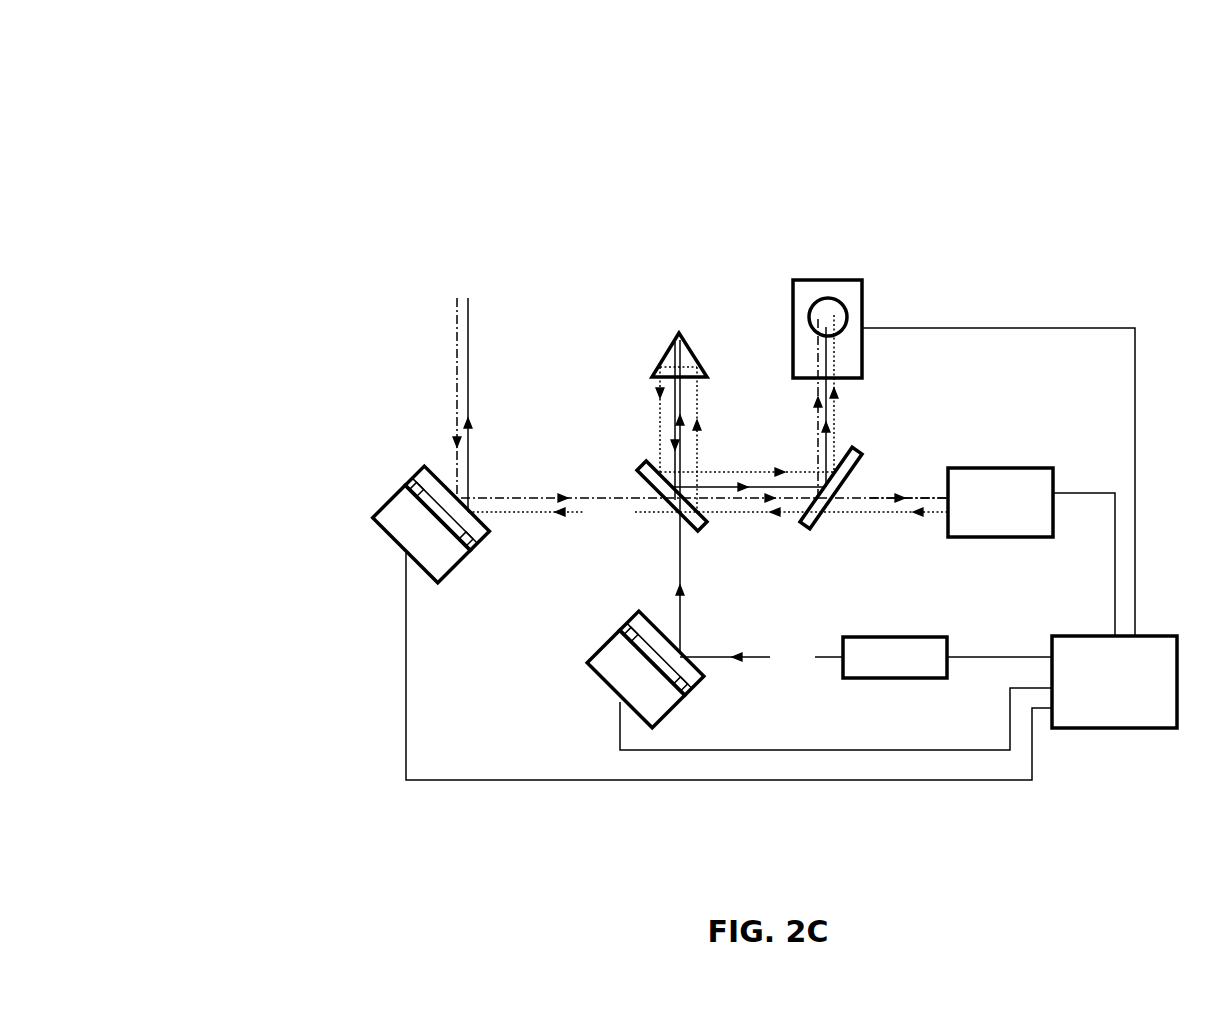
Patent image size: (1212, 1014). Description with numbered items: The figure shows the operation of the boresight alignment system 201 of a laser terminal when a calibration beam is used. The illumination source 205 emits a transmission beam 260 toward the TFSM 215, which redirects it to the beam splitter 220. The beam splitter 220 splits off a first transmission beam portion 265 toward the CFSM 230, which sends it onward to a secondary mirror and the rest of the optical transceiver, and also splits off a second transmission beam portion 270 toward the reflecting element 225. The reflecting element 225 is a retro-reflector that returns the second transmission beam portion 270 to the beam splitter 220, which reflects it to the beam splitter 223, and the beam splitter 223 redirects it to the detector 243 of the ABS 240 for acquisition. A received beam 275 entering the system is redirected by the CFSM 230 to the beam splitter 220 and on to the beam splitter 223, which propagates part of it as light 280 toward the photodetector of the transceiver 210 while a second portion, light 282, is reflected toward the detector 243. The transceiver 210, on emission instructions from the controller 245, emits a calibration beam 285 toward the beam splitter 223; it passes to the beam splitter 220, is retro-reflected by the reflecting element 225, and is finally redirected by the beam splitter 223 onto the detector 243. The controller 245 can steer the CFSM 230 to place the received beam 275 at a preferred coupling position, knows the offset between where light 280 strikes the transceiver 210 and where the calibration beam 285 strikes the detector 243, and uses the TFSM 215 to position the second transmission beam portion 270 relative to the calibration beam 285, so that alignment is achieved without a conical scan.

The boresight alignment system 201 is at (64, 35).
The illumination source 205 is at (925, 679).
The transceiver 210 is at (1008, 467).
The transmission fast steering mirror (TFSM) 215 is at (595, 683).
The beam splitter 220 is at (642, 472).
The beam splitter 223 is at (812, 528).
The reflecting element 225 is at (686, 346).
The common fast steering mirror (CFSM) 230 is at (388, 535).
The acquisition and boresight sensor (ABS) 240 is at (865, 290).
The detector 243 is at (813, 297).
The controller 245 is at (1114, 682).
The transmission beam 260 is at (761, 657).
The first transmission beam portion 265 is at (468, 342).
The second transmission beam portion 270 is at (680, 407).
The received beam 275 is at (457, 368).
The light 280 is at (877, 497).
The light 282 is at (817, 413).
The calibration beam 285 is at (823, 365).